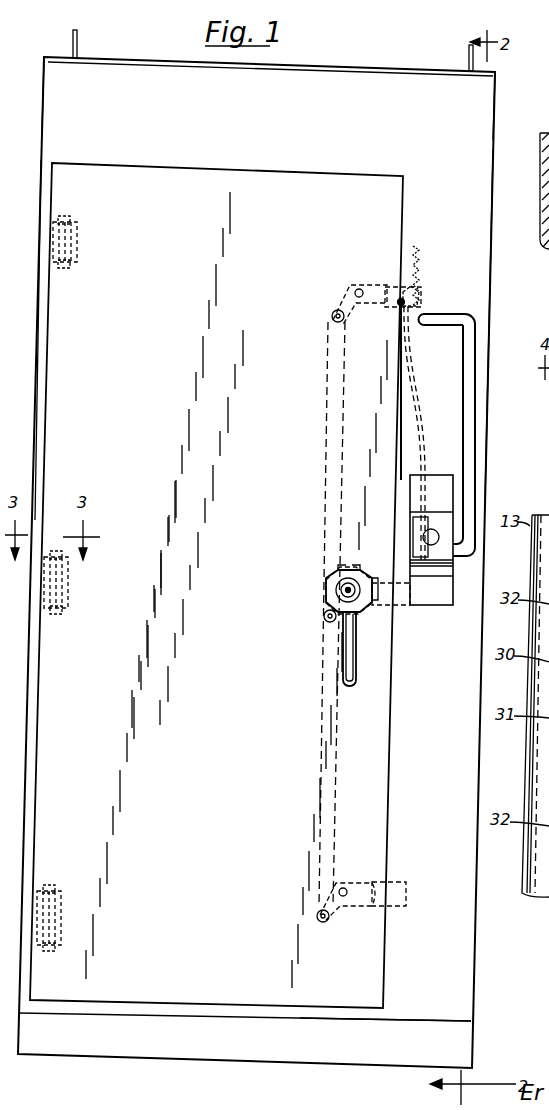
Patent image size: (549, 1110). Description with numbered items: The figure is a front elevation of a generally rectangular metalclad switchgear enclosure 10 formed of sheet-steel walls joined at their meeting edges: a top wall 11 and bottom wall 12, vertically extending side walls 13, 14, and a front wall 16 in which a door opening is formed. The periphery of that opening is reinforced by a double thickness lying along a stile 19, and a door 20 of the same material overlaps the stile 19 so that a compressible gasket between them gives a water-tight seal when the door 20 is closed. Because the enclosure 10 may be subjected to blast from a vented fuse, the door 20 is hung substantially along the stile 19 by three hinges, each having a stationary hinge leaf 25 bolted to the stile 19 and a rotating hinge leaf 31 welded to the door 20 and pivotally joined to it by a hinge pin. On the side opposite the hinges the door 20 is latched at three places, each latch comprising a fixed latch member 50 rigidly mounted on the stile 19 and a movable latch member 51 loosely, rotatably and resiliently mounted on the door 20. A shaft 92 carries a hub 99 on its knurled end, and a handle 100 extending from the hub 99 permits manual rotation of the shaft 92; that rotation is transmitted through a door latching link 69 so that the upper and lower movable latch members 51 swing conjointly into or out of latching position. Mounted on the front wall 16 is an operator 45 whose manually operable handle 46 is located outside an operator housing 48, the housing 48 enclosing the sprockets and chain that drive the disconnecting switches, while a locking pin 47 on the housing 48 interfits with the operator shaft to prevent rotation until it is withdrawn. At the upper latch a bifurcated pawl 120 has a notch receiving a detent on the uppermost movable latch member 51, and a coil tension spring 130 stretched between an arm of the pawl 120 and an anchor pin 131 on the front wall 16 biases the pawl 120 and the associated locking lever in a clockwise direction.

The enclosure 10 is at (418, 60).
The top wall 11 is at (342, 68).
The bottom wall 12 is at (452, 1019).
The side wall 13 is at (44, 120).
The side wall 14 is at (494, 118).
The front wall 16 is at (320, 126).
The stile 19 is at (42, 334).
The door 20 is at (214, 348).
The stationary hinge leaf 25 is at (90, 241).
The rotating hinge leaf 31 is at (63, 277).
The operator 45 is at (433, 446).
The handle 46 is at (470, 428).
The locking pin 47 is at (440, 538).
The operator housing 48 is at (440, 521).
The fixed latch member 50 is at (427, 296).
The movable latch member 51 is at (346, 283).
The door latching link 69 is at (323, 779).
The shaft 92 is at (348, 584).
The hub 99 is at (326, 588).
The handle 100 is at (350, 676).
The pawl 120 is at (398, 305).
The coil tension spring 130 is at (418, 288).
The anchor pin 131 is at (413, 246).